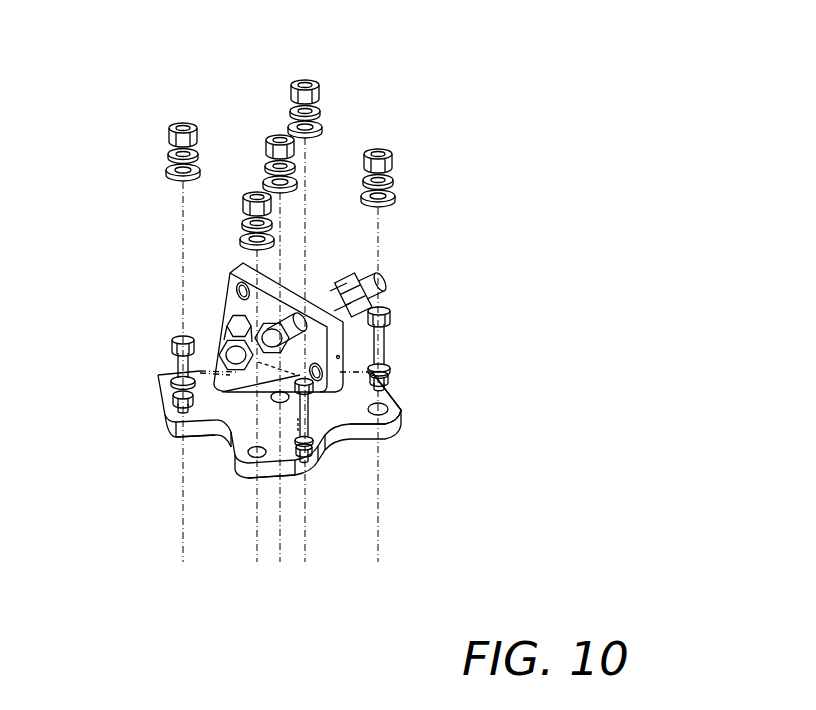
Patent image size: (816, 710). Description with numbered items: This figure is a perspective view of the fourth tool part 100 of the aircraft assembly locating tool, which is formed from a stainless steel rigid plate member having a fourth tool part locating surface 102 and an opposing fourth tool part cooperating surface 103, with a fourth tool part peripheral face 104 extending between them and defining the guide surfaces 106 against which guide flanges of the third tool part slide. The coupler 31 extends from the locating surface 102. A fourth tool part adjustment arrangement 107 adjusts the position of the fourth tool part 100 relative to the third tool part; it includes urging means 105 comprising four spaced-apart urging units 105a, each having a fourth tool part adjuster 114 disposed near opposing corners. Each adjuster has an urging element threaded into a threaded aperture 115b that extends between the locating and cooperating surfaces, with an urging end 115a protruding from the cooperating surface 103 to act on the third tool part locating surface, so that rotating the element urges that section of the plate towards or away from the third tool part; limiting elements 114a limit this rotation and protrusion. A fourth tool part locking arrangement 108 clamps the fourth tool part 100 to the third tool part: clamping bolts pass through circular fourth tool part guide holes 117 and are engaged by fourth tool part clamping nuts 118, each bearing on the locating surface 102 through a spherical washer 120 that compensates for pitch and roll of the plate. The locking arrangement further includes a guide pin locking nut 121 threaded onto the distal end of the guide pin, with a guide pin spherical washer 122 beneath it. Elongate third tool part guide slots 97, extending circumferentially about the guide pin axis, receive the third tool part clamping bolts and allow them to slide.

The fourth tool part 100 is at (652, 263).
The fourth tool part locking arrangement 108 is at (408, 128).
The fourth tool part clamping nut 118 is at (184, 120).
The spherical washer 120 is at (325, 127).
The guide pin locking nut 121 is at (270, 134).
The guide pin spherical washer 122 is at (268, 184).
The coupler 31 is at (297, 292).
The fourth tool part locating surface 102 is at (230, 415).
The fourth tool part cooperating surface 103 is at (223, 440).
The fourth tool part peripheral face 104 is at (280, 476).
The guide surfaces 106 is at (402, 403).
The fourth tool part guide holes 117 is at (383, 408).
The third tool part guide slots 97 is at (303, 425).
The urging means 105 is at (172, 339).
The urging units 105a is at (276, 254).
The fourth tool part adjuster 114 is at (185, 338).
The limiting elements 114a is at (173, 398).
The fourth tool part adjustment arrangement 107 is at (381, 338).
The urging end 115a is at (384, 368).
The threaded aperture 115b is at (307, 467).